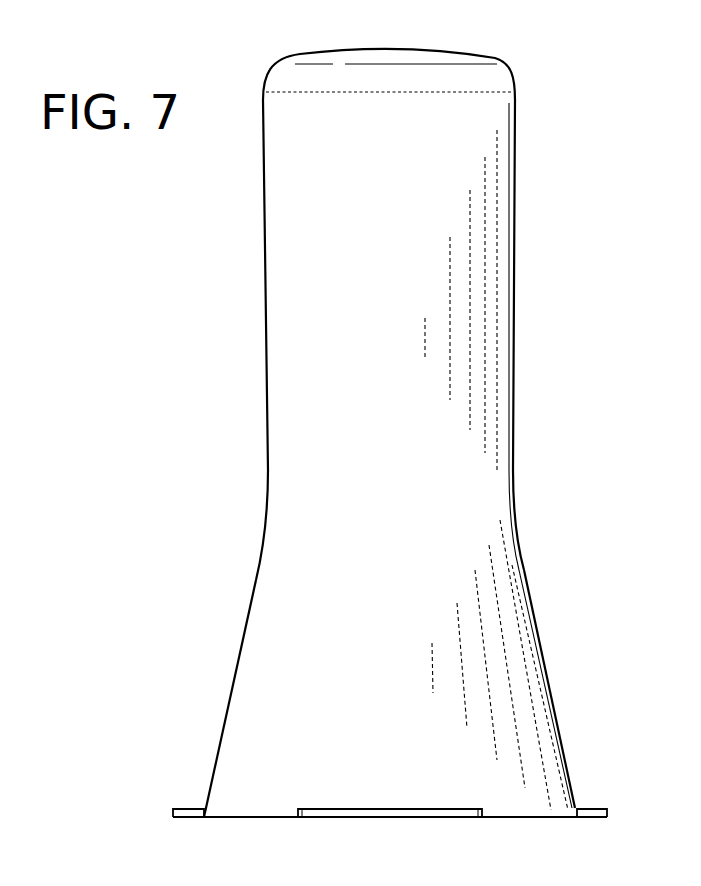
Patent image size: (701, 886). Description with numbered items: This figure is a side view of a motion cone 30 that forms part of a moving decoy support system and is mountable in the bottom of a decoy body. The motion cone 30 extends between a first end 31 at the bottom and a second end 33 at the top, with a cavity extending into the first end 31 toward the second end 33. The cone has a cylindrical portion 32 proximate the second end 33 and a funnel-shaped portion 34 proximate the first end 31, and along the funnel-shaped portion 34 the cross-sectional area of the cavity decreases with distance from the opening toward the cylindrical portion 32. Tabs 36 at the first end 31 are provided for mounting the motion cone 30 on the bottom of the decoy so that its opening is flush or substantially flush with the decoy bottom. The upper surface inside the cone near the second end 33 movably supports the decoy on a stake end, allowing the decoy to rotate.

The motion cone 30 is at (545, 38).
The first end 31 is at (563, 790).
The cylindrical portion 32 is at (513, 245).
The second end 33 is at (516, 97).
The funnel-shaped portion 34 is at (547, 672).
The tabs 36 is at (347, 818).